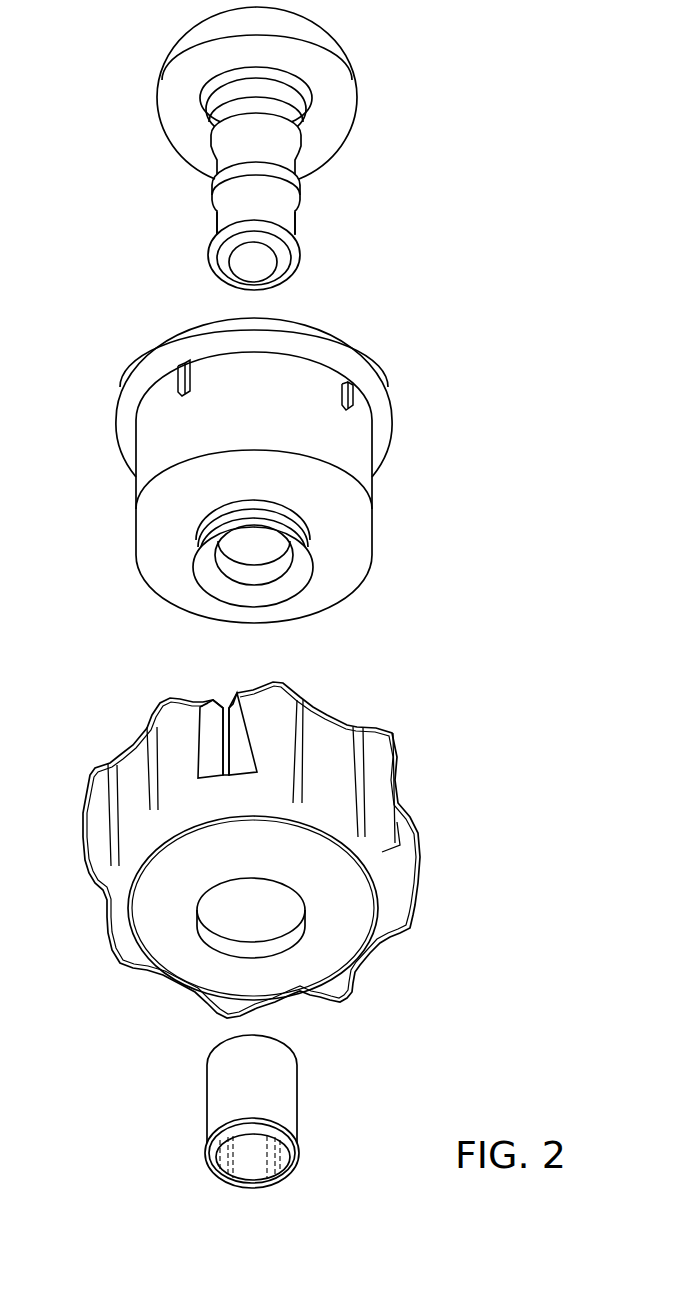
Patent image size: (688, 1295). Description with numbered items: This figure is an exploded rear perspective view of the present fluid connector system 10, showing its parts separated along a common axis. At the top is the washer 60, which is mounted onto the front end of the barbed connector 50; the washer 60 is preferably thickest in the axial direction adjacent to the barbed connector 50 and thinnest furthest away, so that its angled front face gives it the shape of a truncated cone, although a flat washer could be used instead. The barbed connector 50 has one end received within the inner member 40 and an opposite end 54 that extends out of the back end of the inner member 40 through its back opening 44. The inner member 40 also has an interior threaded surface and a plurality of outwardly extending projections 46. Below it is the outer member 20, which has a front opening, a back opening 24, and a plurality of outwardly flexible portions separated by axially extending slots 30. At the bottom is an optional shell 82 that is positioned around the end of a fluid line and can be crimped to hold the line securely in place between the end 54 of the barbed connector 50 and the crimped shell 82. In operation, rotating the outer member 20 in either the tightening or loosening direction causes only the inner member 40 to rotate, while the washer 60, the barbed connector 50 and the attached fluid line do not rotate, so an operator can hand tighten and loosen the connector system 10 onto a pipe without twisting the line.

The connector system 10 is at (466, 512).
The outer member 20 is at (419, 890).
The back opening 24 is at (217, 938).
The axially extending slots 30 is at (206, 735).
The inner member 40 is at (137, 498).
The back opening 44 is at (226, 572).
The outwardly extending projections 46 is at (353, 393).
The barbed connector 50 is at (296, 213).
The end 54 is at (229, 212).
The washer 60 is at (353, 88).
The shell 82 is at (299, 1107).